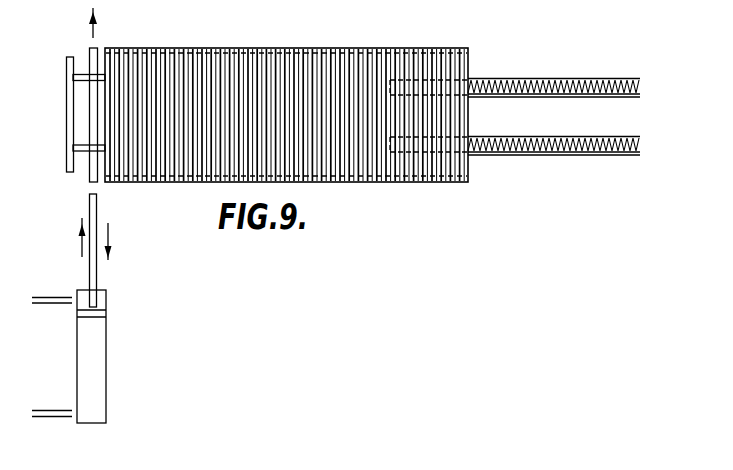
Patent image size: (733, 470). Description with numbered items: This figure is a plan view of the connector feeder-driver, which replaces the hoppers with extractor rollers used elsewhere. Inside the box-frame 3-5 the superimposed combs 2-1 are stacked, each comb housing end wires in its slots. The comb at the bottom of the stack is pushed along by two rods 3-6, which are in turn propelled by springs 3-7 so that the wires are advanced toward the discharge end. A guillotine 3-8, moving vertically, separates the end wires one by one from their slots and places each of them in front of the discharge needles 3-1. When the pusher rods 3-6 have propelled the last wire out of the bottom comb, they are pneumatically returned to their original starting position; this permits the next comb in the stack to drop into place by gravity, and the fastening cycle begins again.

The superimposed combs 2-1 is at (235, 85).
The discharge needles 3-1 is at (100, 363).
The box-frame 3-5 is at (110, 62).
The rods (pusher) 3-6 is at (433, 76).
The springs 3-7 is at (570, 87).
The guillotine 3-8 is at (76, 75).